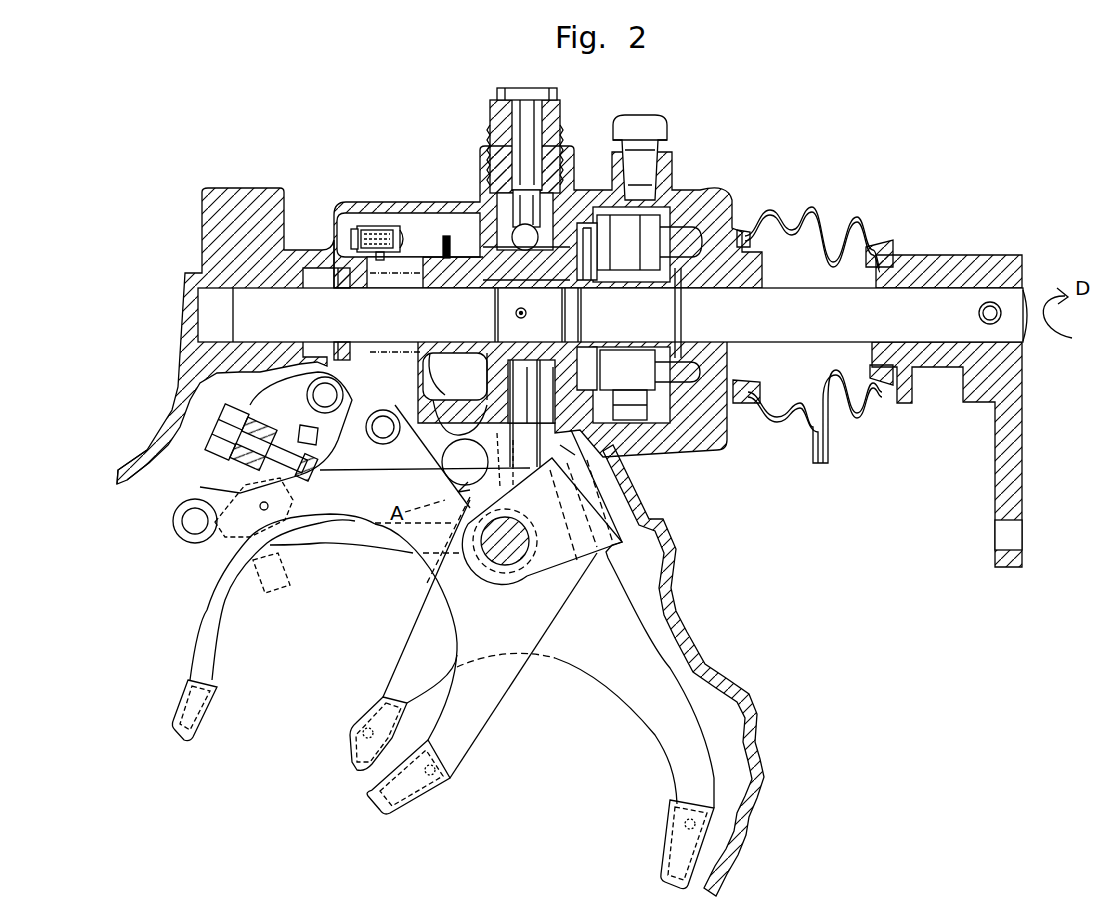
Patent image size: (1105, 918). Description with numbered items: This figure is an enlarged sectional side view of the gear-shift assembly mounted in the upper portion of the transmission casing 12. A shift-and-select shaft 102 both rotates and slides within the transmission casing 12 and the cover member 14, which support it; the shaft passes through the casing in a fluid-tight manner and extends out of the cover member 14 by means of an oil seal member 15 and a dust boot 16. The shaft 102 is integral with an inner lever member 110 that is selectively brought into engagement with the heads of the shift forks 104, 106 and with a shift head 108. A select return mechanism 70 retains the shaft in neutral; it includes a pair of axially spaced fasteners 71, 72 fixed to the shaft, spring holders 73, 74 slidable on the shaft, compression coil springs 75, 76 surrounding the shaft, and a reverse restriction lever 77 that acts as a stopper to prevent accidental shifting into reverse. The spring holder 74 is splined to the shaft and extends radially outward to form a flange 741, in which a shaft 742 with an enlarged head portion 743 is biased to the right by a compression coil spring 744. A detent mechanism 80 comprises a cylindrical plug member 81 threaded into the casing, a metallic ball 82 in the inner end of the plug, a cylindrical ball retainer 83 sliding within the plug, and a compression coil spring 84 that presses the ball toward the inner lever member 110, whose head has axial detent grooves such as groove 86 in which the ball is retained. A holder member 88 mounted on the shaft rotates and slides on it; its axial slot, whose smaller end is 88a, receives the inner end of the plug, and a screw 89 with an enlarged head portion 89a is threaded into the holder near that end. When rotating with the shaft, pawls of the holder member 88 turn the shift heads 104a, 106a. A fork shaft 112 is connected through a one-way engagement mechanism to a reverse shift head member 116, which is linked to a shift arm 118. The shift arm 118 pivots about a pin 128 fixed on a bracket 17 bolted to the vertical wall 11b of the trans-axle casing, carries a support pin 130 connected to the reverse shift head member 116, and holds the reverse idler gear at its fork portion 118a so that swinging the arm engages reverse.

The vertical wall 11b is at (178, 432).
The transmission casing 12 is at (246, 205).
The cover member 14 is at (712, 203).
The oil seal member 15 is at (797, 350).
The dust boot 16 is at (755, 405).
The bracket 17 is at (265, 395).
The select return mechanism 70 is at (382, 232).
The fastener 71 is at (683, 290).
The fastener 72 is at (333, 275).
The spring holder 73 is at (640, 390).
The spring holder 74 is at (345, 262).
The compression coil spring 75 is at (603, 350).
The compression coil spring 76 is at (406, 278).
The reverse restriction lever 77 is at (400, 430).
The detent mechanism 80 is at (498, 215).
The cylindrical plug member 81 is at (495, 125).
The metallic ball 82 is at (513, 212).
The cylindrical ball retainer 83 is at (555, 192).
The compression coil spring 84 is at (560, 108).
The axial detent groove 86 is at (580, 290).
The holder member 88 is at (612, 243).
The slot end 88a is at (512, 230).
The screw 89 is at (413, 225).
The enlarged head portion 89a is at (441, 236).
The shift-and-select shaft 102 is at (482, 327).
The shift fork 104 is at (682, 705).
The shift head 104a is at (597, 441).
The shift fork 106 is at (497, 712).
The shift head 106a is at (560, 445).
The shift head 108 is at (494, 403).
The inner lever member 110 is at (540, 362).
The fork shaft 112 is at (505, 565).
The reverse shift head member 116 is at (480, 453).
The shift arm 118 is at (206, 614).
The fork portion 118a is at (208, 722).
The pin 128 is at (302, 468).
The support pin 130 is at (256, 595).
The flange 741 is at (383, 260).
The shaft 742 is at (352, 240).
The enlarged head portion 743 is at (443, 247).
The compression coil spring 744 is at (350, 228).